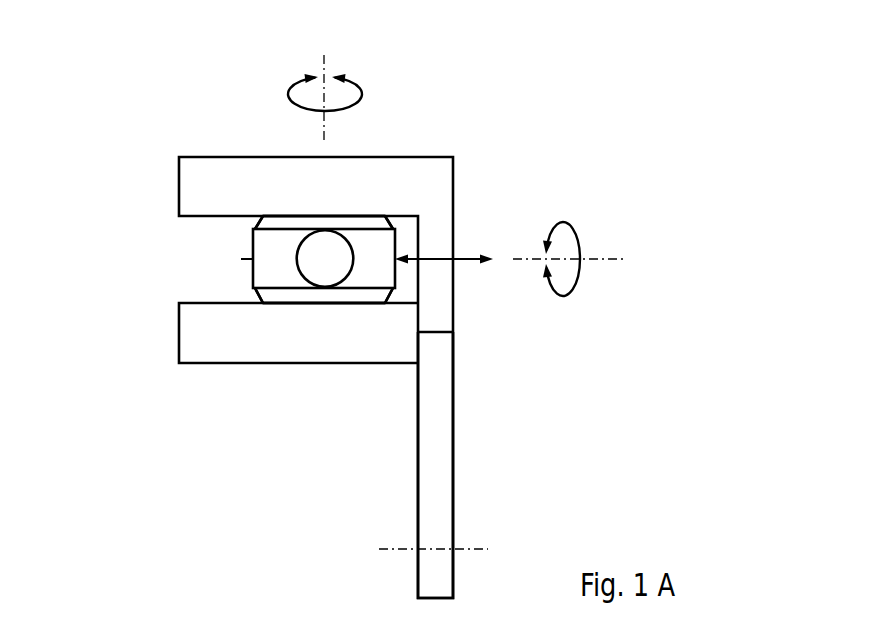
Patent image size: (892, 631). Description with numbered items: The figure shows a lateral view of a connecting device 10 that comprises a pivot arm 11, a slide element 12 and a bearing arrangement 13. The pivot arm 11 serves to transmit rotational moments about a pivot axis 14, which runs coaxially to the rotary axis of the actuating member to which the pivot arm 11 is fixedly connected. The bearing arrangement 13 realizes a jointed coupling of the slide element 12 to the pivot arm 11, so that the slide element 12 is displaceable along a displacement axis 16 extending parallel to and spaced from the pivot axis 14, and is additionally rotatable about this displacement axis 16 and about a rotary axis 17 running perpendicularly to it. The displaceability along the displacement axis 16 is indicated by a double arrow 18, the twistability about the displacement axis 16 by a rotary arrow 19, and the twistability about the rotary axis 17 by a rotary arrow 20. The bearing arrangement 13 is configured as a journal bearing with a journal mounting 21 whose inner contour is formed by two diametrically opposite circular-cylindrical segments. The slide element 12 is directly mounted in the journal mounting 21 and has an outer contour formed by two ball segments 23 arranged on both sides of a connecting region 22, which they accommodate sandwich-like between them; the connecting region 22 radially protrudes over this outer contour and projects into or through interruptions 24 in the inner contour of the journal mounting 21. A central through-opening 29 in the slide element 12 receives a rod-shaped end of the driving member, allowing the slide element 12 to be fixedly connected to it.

The connecting device 10 is at (670, 133).
The pivot arm 11 is at (437, 428).
The slide element 12 is at (241, 259).
The bearing arrangement 13 is at (166, 298).
The pivot axis 14 is at (472, 549).
The displacement axis 16 is at (600, 257).
The rotary axis 17 is at (324, 137).
The double arrow 18 is at (437, 259).
The rotary arrow 19 is at (572, 222).
The rotary arrow 20 is at (290, 96).
The journal mounting 21 is at (212, 300).
The connecting region 22 is at (285, 266).
The ball segments 23 is at (297, 222).
The interruptions 24 is at (212, 268).
The through-opening 29 is at (338, 272).